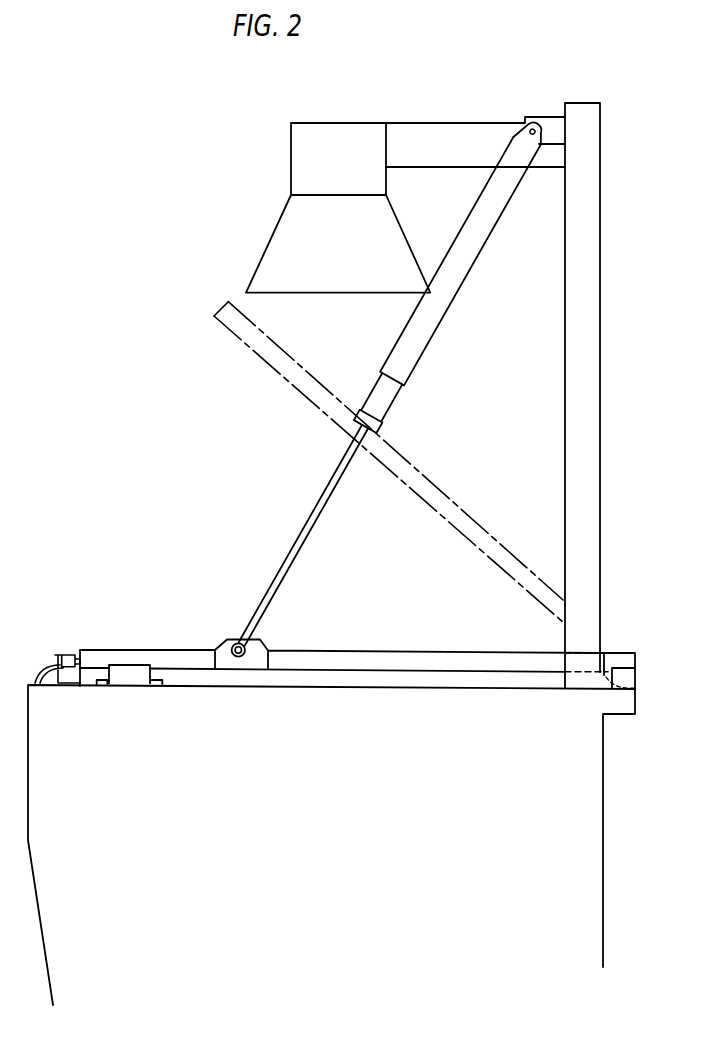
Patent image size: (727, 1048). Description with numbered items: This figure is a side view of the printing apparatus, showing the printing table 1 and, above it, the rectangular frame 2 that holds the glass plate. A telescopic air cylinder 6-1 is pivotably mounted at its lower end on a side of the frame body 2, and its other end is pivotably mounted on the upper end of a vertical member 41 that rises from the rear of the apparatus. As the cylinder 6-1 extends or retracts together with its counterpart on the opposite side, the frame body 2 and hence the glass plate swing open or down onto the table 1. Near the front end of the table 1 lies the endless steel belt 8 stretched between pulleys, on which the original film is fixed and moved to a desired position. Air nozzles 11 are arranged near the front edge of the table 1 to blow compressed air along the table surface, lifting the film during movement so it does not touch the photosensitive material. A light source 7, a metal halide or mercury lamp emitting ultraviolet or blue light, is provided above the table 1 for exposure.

The light source 7 is at (288, 237).
The telescopic air cylinder 6-1 is at (428, 323).
The vertical member 41 is at (600, 347).
The rectangular frame 2 is at (360, 645).
The printing table 1 is at (403, 680).
The air nozzles 11 is at (70, 655).
The endless steel belt 8 is at (123, 672).